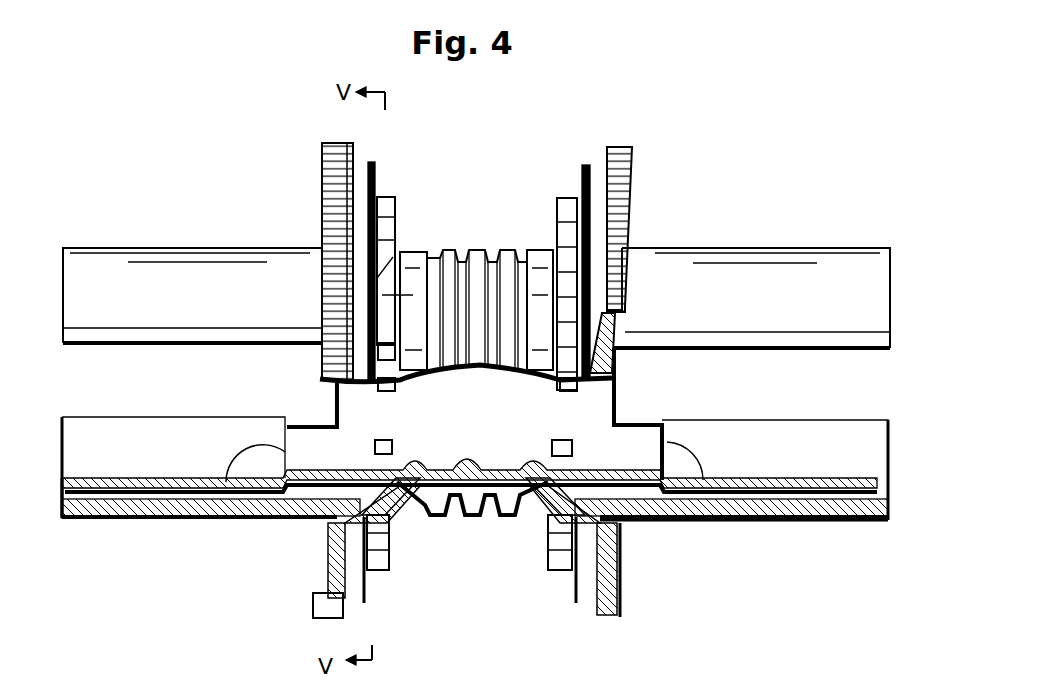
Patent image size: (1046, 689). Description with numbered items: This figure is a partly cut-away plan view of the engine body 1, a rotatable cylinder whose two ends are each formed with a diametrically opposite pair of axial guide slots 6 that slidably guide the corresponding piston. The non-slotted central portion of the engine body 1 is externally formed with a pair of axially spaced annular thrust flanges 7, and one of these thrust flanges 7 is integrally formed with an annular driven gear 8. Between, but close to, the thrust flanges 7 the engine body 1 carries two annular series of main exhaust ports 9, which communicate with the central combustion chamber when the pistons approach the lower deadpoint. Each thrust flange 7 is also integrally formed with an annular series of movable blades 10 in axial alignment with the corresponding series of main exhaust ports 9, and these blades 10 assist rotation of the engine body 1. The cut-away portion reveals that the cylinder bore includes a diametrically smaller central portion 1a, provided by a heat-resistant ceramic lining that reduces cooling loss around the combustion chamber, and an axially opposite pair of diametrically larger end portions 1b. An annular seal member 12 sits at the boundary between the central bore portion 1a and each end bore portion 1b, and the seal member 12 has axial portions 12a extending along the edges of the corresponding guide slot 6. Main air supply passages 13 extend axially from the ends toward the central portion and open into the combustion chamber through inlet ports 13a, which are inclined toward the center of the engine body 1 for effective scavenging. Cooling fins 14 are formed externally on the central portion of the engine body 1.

The engine body 1 is at (686, 121).
The central portion of cylinder bore 1a is at (471, 522).
The end portions of cylinder bore 1b is at (163, 520).
The axial guide slots 6 is at (125, 372).
The annular thrust flanges 7 is at (325, 552).
The annular driven gear 8 is at (330, 143).
The main exhaust ports 9 is at (398, 348).
The movable blades 10 is at (386, 197).
The annular seal member 12 is at (236, 482).
The axial portions of seal member 12a is at (172, 336).
The main air supply passages 13 is at (90, 518).
The inlet ports 13a is at (418, 522).
The cooling fins 14 is at (512, 250).